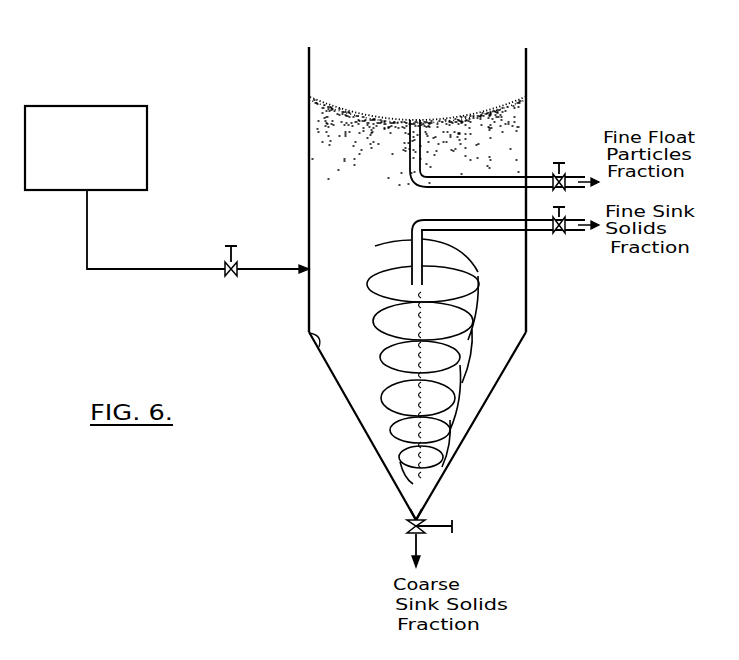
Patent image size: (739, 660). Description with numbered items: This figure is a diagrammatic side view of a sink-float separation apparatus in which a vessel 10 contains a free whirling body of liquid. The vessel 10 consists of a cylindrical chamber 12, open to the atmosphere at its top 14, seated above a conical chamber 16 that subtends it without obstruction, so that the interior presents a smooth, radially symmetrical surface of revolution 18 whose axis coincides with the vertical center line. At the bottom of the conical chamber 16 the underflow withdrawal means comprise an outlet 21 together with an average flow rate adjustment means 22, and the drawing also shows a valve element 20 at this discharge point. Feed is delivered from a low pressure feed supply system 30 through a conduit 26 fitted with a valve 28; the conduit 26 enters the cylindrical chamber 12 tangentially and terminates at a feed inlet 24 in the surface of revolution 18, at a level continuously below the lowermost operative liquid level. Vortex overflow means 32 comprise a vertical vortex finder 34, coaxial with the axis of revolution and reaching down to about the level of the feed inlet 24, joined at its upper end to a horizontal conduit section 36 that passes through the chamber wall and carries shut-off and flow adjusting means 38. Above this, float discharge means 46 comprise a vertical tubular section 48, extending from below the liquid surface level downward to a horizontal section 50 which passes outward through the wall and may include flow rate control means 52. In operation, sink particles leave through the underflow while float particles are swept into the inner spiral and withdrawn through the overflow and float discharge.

The vessel 10 is at (428, 270).
The cylindrical chamber 12 is at (523, 118).
The top 14 is at (495, 65).
The conical chamber 16 is at (485, 414).
The surface of revolution 18 is at (318, 348).
The bottom discharge valve 20 is at (419, 518).
The outlet 21 is at (415, 518).
The average flow rate adjustment means 22 is at (408, 528).
The feed inlet 24 is at (308, 266).
The conduit 26 is at (245, 272).
The feed valve 28 is at (227, 262).
The low pressure feed supply system 30 is at (55, 191).
The vortex overflow means 32 is at (503, 232).
The vortex finder 34 is at (412, 250).
The horizontal conduit section 36 is at (572, 233).
The means for shutting off the flow 38 is at (557, 234).
The float discharge means 46 is at (537, 187).
The tubular section 48 is at (420, 155).
The horizontal section 50 is at (571, 176).
The flow rate control means 52 is at (555, 177).